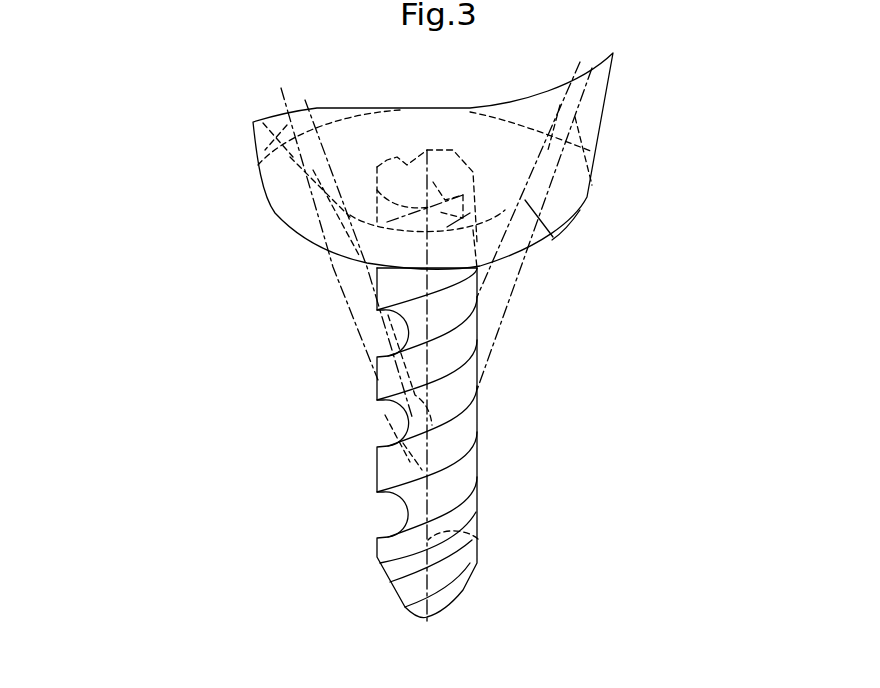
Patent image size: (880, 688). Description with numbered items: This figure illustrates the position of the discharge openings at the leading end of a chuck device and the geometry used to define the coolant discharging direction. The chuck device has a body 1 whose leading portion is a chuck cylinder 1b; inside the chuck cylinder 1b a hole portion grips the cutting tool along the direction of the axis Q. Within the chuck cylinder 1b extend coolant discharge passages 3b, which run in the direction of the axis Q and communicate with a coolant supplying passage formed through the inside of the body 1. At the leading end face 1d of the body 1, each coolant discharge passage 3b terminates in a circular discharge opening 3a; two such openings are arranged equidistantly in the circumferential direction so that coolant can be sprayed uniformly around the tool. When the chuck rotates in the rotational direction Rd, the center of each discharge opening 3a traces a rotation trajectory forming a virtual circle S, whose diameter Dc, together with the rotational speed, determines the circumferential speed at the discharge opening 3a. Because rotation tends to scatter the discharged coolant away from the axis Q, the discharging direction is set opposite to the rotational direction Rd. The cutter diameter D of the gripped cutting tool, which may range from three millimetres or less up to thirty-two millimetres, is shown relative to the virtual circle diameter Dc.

The body 1 is at (471, 339).
The chuck cylinder 1b is at (593, 115).
The leading end face 1d is at (568, 225).
The discharge opening 3a is at (333, 162).
The coolant discharge passage 3b is at (262, 110).
The virtual circle S is at (527, 200).
The axis Q is at (478, 539).
The rotational direction Rd is at (283, 293).
The diameter of virtual circle Dc is at (540, 180).
The cutter diameter D is at (377, 567).